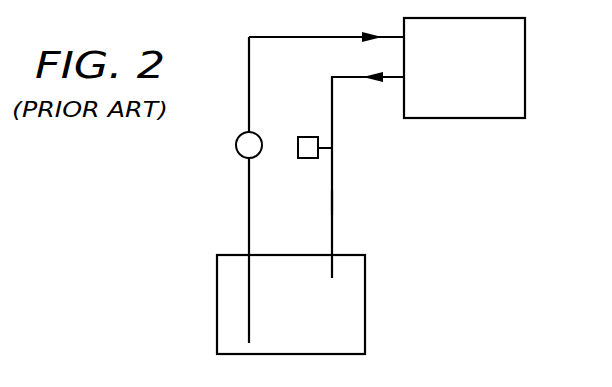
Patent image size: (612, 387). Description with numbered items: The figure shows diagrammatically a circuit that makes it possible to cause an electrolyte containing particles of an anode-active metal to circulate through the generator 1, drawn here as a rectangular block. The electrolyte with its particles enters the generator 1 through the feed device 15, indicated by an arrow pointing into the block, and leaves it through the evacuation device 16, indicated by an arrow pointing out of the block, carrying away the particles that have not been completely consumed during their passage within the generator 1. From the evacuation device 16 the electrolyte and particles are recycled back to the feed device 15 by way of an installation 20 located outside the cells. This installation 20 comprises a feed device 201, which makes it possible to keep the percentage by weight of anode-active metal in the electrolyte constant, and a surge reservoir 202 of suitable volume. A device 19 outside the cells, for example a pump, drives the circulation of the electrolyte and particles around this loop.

The generator 1 is at (536, 34).
The feed device 15 is at (326, 25).
The evacuation device 16 is at (368, 175).
The pump 19 is at (239, 135).
The installation 20 is at (340, 196).
The feed device 201 is at (297, 138).
The surge reservoir 202 is at (291, 304).